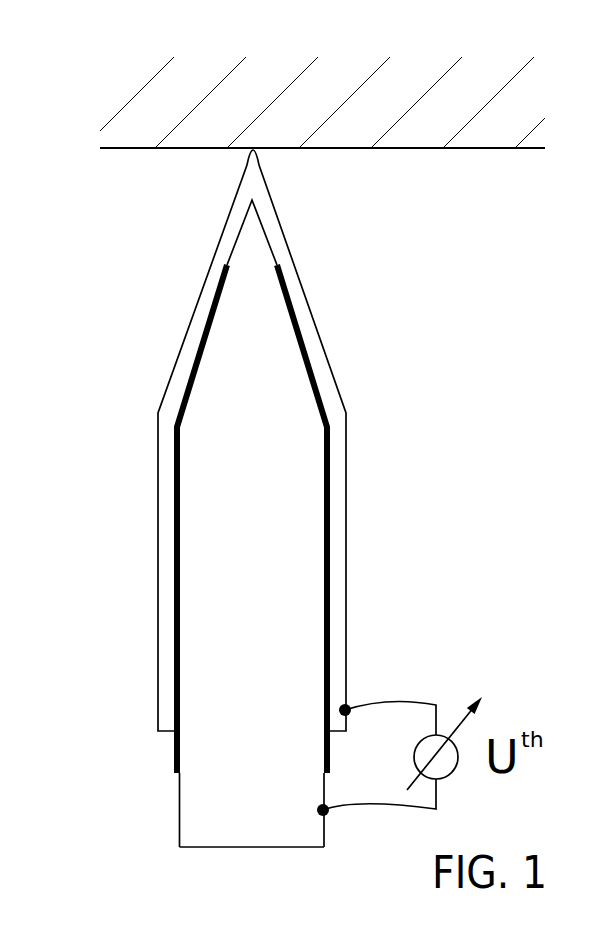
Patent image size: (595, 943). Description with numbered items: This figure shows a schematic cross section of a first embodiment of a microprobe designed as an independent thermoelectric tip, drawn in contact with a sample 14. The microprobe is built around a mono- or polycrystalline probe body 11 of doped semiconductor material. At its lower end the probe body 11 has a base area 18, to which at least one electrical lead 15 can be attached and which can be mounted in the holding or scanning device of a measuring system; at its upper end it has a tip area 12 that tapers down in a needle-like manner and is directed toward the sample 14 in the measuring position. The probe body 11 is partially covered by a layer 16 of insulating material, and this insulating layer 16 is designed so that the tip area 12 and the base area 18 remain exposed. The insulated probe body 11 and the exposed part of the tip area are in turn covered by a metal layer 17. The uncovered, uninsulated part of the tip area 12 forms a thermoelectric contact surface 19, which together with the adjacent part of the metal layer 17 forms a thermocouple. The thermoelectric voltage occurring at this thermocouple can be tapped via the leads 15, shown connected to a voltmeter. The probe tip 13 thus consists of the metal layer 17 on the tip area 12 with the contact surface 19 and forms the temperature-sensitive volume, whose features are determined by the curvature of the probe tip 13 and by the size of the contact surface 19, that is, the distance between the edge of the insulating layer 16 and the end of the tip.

The probe body 11 is at (260, 630).
The tip area 12 is at (250, 263).
The probe tip 13 is at (313, 187).
The sample 14 is at (354, 60).
The electrical lead 15 is at (387, 700).
The insulating layer 16 is at (328, 510).
The metal layer 17 is at (308, 328).
The base area 18 is at (260, 823).
The thermoelectric contact surface 19 is at (258, 222).